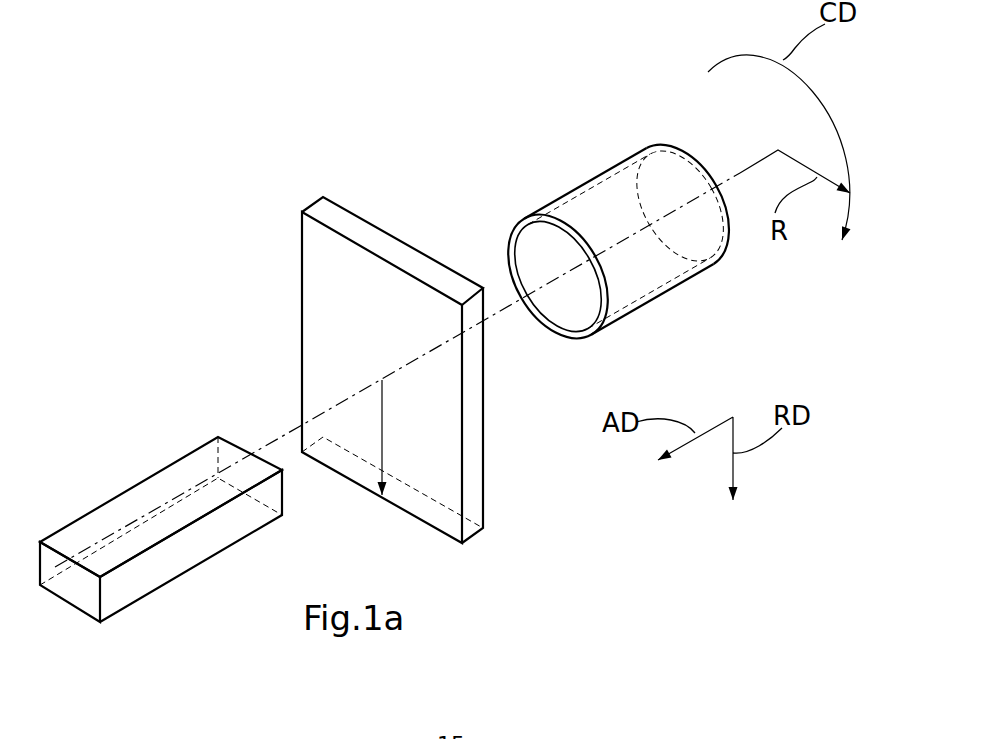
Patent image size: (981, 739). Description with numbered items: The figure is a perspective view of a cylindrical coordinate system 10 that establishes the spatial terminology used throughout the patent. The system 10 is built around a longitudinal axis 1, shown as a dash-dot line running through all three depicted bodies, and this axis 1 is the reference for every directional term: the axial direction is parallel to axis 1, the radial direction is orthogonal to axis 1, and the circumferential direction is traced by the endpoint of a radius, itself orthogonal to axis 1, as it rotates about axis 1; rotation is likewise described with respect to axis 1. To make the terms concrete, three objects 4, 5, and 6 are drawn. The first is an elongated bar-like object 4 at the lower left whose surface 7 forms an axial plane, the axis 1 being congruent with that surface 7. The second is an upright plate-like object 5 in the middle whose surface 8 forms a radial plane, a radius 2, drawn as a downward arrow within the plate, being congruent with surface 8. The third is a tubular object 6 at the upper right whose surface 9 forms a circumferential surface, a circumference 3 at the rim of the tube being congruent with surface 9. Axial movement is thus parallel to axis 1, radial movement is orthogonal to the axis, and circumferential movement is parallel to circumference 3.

The longitudinal axis 1 is at (715, 187).
The radius 2 is at (383, 430).
The circumference 3 is at (508, 242).
The object 4 is at (125, 608).
The object 5 is at (492, 531).
The object 6 is at (643, 306).
The surface 7 is at (120, 510).
The surface 8 is at (315, 328).
The surface 9 is at (586, 180).
The cylindrical coordinate system 10 is at (257, 248).